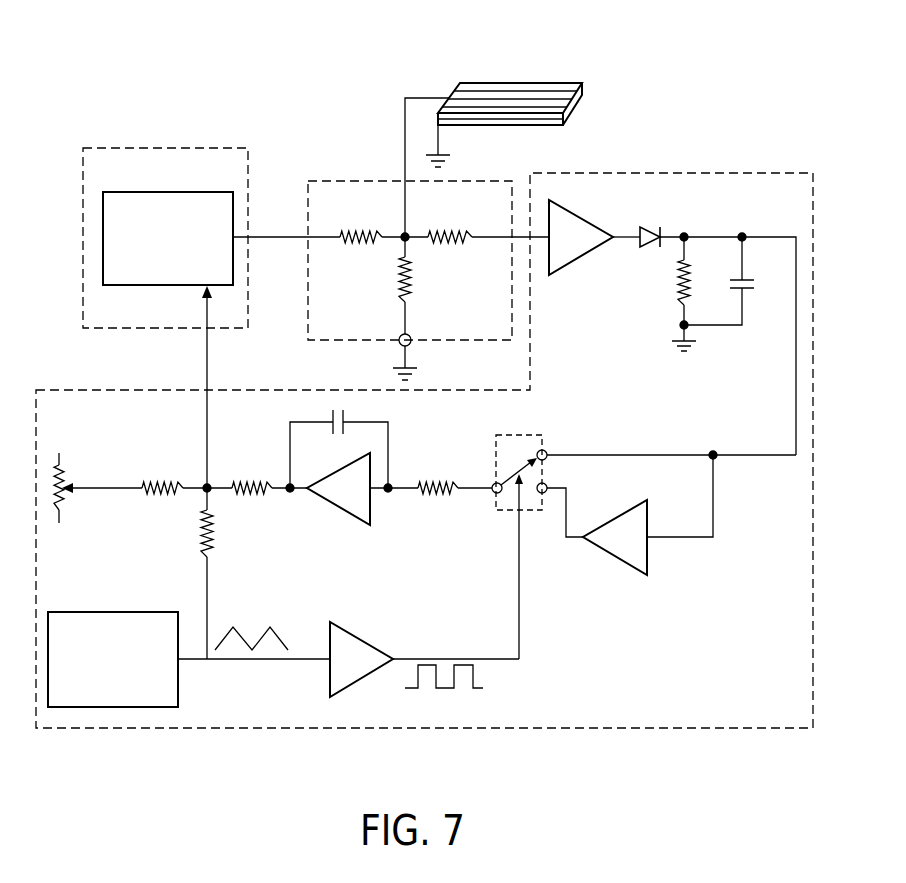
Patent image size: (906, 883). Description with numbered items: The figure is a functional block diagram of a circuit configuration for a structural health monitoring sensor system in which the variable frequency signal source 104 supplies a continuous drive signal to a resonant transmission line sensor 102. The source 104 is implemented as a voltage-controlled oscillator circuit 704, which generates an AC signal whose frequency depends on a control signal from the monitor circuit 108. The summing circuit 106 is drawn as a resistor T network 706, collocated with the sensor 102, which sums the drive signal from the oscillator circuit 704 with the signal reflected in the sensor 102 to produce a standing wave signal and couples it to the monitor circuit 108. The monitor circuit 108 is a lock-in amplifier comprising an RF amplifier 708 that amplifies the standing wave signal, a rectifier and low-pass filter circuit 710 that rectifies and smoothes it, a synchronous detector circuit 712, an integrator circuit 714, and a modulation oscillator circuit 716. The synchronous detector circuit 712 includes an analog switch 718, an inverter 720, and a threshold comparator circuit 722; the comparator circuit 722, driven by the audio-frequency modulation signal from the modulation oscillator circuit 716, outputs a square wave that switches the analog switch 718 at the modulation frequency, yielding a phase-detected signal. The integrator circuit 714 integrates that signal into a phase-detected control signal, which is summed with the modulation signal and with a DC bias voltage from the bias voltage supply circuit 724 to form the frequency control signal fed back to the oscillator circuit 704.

The sensor 102 is at (545, 83).
The variable frequency signal source 104 is at (131, 96).
The summing circuit 106 is at (322, 181).
The monitor circuit 108 is at (673, 289).
The voltage-controlled oscillator circuit 704 is at (203, 192).
The resistor T network 706 is at (397, 225).
The RF amplifier 708 is at (585, 226).
The rectifier and low-pass filter circuit 710 is at (690, 226).
The synchronous detector circuit 712 is at (626, 516).
The integrator circuit 714 is at (276, 456).
The modulation oscillator circuit 716 is at (150, 612).
The analog switch 718 is at (522, 438).
The inverter 720 is at (622, 522).
The threshold comparator circuit 722 is at (360, 638).
The bias voltage supply circuit 724 is at (120, 473).